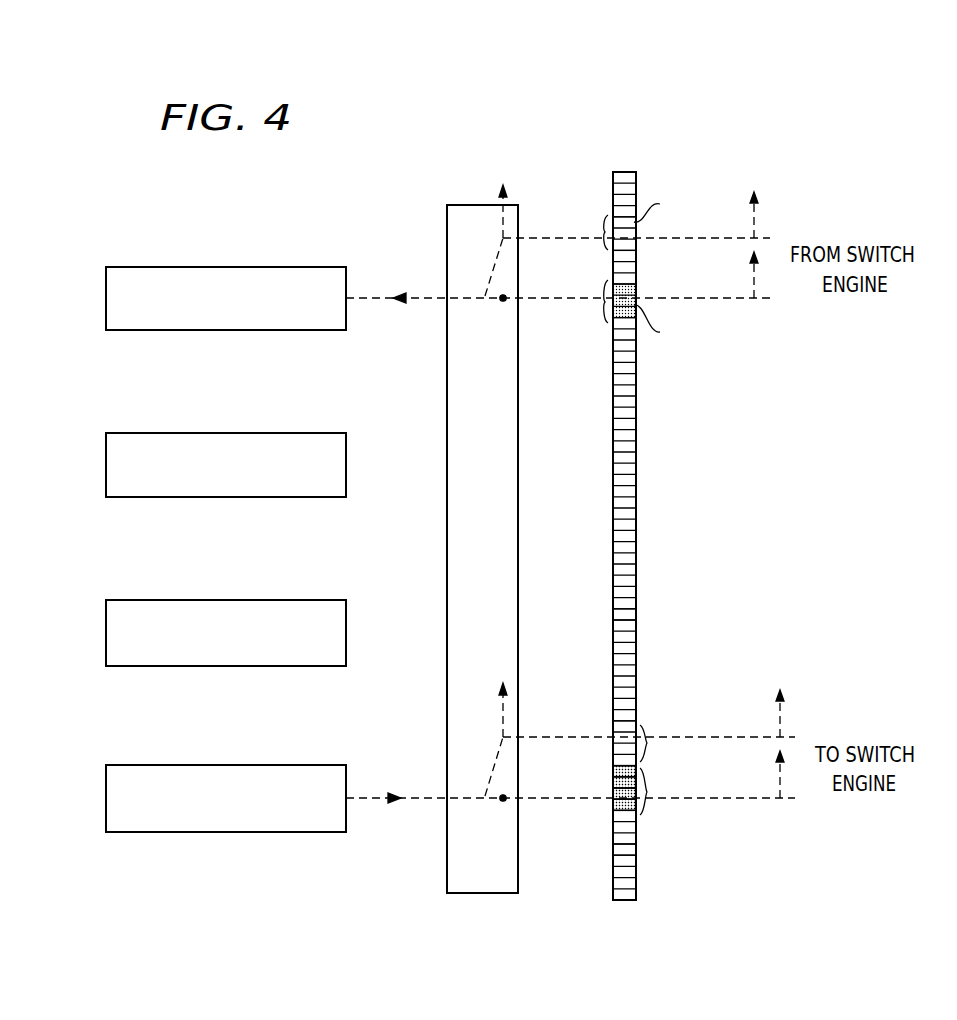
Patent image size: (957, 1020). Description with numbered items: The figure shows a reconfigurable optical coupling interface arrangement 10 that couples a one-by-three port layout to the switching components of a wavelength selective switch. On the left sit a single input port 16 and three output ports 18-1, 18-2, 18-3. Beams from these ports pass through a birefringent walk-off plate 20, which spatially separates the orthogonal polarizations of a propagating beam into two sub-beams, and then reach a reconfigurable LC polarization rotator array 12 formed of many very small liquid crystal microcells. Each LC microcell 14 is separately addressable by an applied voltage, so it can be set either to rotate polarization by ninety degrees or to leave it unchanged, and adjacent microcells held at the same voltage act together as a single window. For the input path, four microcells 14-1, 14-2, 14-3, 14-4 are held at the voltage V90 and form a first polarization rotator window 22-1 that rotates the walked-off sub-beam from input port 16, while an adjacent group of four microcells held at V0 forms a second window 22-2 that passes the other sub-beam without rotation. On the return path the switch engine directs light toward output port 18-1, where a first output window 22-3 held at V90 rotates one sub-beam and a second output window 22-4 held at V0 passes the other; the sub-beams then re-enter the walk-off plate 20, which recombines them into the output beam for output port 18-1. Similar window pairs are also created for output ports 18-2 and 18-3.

The reconfigurable optical coupling interface arrangement 10 is at (575, 178).
The reconfigurable LC polarization rotator array 12 is at (636, 518).
The LC microcell 14 is at (620, 613).
The LC microcell 14-1 is at (613, 805).
The LC microcell 14-2 is at (613, 794).
The LC microcell 14-3 is at (613, 782).
The LC microcell 14-4 is at (613, 771).
The input port 16 is at (180, 765).
The output port 18-1 is at (180, 267).
The output port 18-2 is at (180, 433).
The output port 18-3 is at (180, 600).
The birefringent walk-off plate 20 is at (472, 210).
The first polarization rotator window 22-1 is at (647, 792).
The second window 22-2 is at (647, 743).
The first output window 22-3 is at (605, 302).
The second output window 22-4 is at (605, 232).